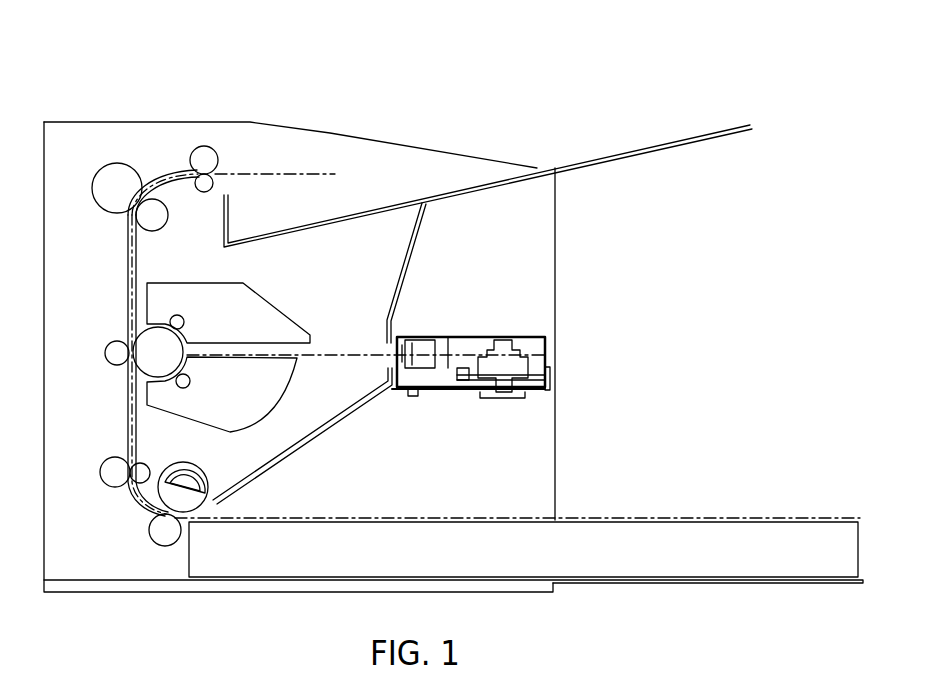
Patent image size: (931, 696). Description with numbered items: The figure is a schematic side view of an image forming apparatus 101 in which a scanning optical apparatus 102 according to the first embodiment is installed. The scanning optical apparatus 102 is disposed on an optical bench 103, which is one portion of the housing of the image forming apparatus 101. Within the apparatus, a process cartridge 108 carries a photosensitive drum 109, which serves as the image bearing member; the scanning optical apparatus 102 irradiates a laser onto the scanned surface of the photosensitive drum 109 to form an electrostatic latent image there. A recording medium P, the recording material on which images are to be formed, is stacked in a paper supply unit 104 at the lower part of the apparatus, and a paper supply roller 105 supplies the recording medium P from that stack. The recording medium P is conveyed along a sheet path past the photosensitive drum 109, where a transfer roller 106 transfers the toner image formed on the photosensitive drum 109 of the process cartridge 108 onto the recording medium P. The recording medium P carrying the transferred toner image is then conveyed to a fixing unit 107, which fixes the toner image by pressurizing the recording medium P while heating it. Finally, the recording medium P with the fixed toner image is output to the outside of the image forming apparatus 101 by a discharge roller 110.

The image forming apparatus 101 is at (70, 132).
The scanning optical apparatus 102 is at (527, 348).
The optical bench 103 is at (463, 393).
The paper supply unit 104 is at (597, 583).
The paper supply roller 105 is at (195, 467).
The transfer roller 106 is at (110, 340).
The fixing unit 107 is at (118, 172).
The process cartridge 108 is at (275, 303).
The photosensitive drum 109 is at (158, 335).
The discharge roller 110 is at (203, 160).
The recording medium P is at (665, 520).